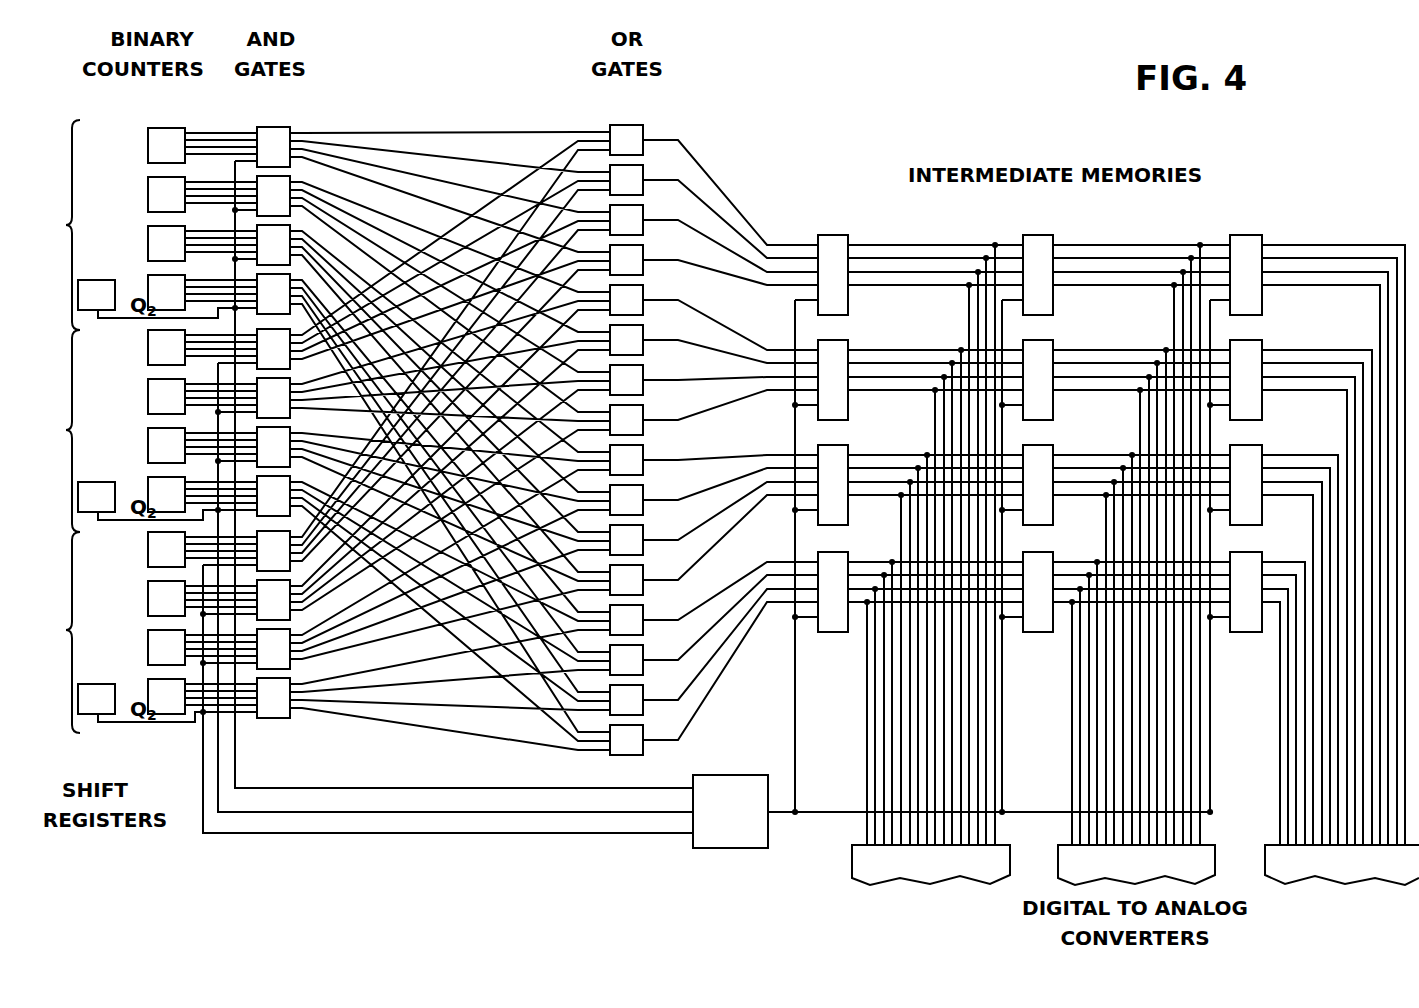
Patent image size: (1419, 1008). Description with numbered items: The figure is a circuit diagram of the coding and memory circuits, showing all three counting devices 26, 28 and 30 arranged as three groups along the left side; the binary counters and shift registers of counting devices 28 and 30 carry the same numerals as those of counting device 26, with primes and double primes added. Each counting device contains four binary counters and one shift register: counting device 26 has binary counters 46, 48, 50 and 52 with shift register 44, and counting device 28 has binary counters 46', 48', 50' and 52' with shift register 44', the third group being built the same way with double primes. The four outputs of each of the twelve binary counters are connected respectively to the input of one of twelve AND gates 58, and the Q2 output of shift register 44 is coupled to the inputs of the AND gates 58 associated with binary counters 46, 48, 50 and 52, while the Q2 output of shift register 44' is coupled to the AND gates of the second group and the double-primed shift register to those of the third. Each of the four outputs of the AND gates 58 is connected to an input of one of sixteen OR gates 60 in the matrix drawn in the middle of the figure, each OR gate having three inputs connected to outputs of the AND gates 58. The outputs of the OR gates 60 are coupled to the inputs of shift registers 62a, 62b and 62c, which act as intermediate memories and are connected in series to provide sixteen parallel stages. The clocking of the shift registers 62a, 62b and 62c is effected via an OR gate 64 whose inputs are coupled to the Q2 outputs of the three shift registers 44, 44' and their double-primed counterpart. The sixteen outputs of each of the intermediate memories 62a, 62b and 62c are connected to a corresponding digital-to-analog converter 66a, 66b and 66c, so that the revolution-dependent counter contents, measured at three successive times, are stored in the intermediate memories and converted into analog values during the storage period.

The counting device 26 is at (57, 225).
The counting device 28 is at (58, 431).
The counting device 30 is at (58, 632).
The shift register 44 is at (156, 274).
The binary counter 46 is at (153, 132).
The binary counter 48 is at (148, 190).
The binary counter 50 is at (144, 232).
The binary counter 52 is at (151, 279).
The shift register 44' is at (148, 479).
The binary counter 46' is at (145, 347).
The binary counter 48' is at (145, 391).
The binary counter 50' is at (148, 433).
The binary counter 52' is at (150, 479).
The AND gates 58 is at (255, 111).
The OR gates 60 is at (612, 108).
The shift register 62a is at (815, 217).
The shift register 62b is at (1020, 217).
The shift register 62c is at (1230, 217).
The OR gate 64 is at (758, 850).
The digital-to-analog converter 66a is at (885, 870).
The digital-to-analog converter 66b is at (1210, 868).
The digital-to-analog converter 66c is at (1368, 866).